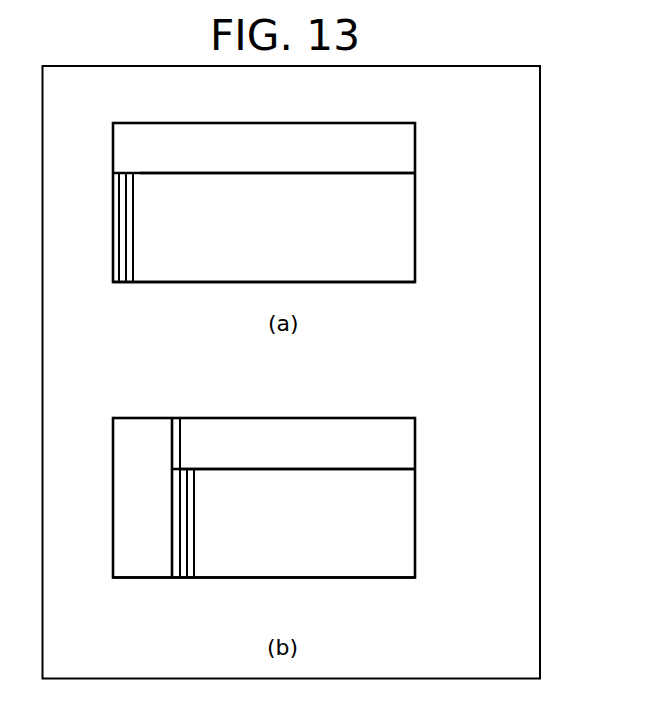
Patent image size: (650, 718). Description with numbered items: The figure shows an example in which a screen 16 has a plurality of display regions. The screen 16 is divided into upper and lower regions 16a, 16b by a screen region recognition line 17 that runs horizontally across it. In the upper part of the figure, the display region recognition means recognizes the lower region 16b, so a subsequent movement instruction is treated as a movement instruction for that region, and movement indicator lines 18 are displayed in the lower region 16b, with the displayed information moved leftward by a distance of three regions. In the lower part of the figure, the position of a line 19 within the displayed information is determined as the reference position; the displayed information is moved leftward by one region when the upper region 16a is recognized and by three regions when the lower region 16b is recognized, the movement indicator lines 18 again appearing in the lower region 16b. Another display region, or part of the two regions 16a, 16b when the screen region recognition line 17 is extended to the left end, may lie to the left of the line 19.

The screen 16 is at (381, 123).
The upper region 16a is at (403, 141).
The lower region 16b is at (403, 262).
The screen region recognition line 17 is at (385, 175).
The striped region 18 is at (132, 204).
The line 19 is at (172, 418).